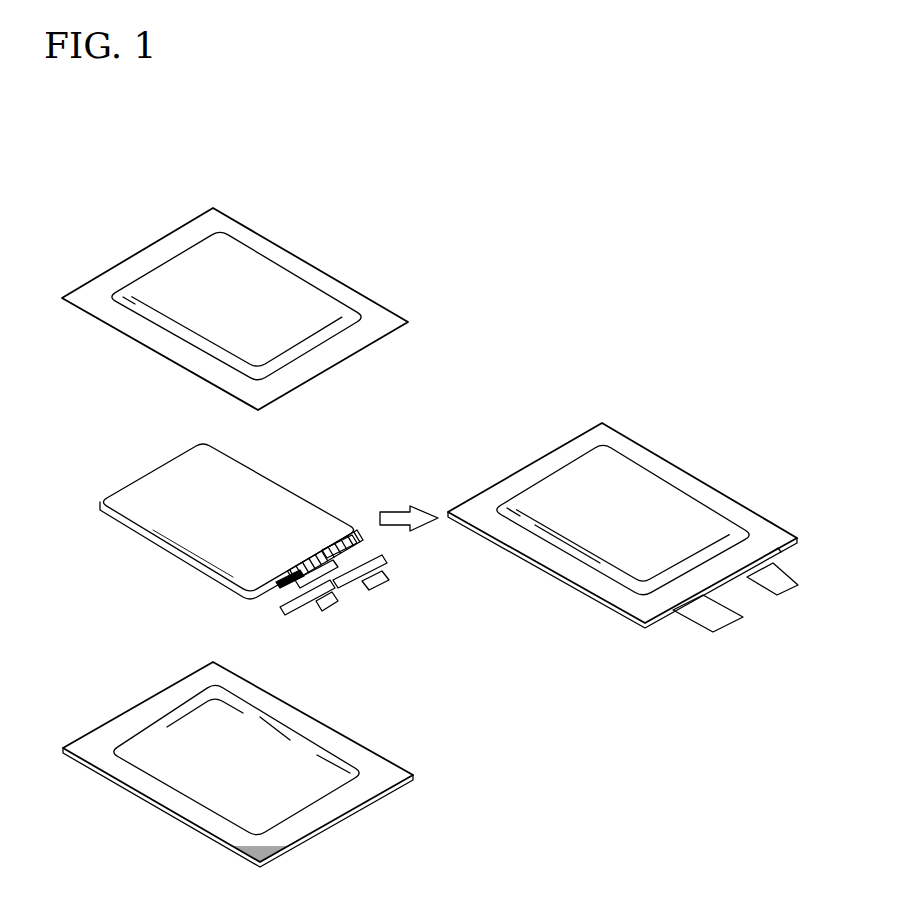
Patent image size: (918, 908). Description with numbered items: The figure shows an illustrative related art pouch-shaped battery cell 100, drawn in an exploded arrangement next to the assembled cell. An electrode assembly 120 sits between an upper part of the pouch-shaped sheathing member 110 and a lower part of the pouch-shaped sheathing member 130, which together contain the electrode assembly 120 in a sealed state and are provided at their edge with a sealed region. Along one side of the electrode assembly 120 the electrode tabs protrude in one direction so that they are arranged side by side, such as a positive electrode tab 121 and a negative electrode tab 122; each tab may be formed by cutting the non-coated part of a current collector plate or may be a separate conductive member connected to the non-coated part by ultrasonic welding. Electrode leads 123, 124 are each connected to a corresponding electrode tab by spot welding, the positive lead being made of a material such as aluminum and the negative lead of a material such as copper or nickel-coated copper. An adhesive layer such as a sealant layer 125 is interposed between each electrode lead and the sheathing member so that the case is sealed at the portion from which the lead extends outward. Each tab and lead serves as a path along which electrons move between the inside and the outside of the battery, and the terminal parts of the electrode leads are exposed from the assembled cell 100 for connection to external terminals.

The battery pack 100 is at (688, 457).
The upper cover 110 is at (410, 320).
The battery cell 120 is at (340, 500).
The first electrode tab 121 is at (342, 545).
The second electrode tab 122 is at (278, 583).
The lead plate 123 is at (376, 568).
The first connection piece 124 is at (379, 579).
The second connection piece 125 is at (308, 607).
The lower cover 130 is at (374, 749).